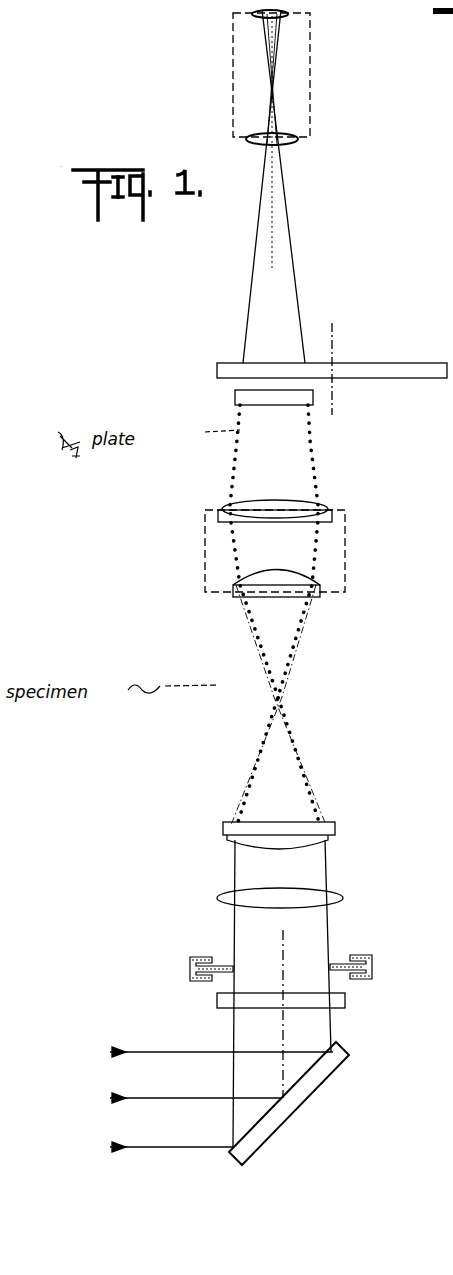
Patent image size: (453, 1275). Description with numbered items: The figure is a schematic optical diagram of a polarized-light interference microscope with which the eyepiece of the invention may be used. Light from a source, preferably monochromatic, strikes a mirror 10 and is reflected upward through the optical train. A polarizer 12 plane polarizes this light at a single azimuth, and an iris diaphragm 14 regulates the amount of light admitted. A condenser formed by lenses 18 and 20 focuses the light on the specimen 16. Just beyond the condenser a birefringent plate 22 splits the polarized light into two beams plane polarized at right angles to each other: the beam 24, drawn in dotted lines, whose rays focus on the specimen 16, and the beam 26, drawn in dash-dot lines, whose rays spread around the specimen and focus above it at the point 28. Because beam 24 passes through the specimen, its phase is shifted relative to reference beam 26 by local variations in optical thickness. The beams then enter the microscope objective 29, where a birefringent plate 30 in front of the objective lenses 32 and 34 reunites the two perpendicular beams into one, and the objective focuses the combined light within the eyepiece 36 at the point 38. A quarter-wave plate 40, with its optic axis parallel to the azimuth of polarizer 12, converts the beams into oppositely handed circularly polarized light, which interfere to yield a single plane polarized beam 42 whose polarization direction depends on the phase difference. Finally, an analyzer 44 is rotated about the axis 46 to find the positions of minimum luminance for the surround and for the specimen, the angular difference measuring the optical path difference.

The mirror 10 is at (320, 1080).
The polarizer 12 is at (301, 998).
The iris diaphragm 14 is at (225, 965).
The specimen 16 is at (277, 697).
The condenser lens 18 is at (275, 906).
The condenser lens 20 is at (286, 845).
The birefringent plate 22 is at (270, 822).
The beam 24 is at (294, 745).
The reference beam 26 is at (256, 752).
The focus point above specimen 28 is at (280, 692).
The microscope objective 29 is at (201, 559).
The birefringent plate 30 is at (283, 598).
The objective lens 32 is at (278, 576).
The objective lens 34 is at (265, 500).
The eyepiece 36 is at (230, 73).
The focus point 38 is at (274, 93).
The quarter-wave plate 40 is at (280, 406).
The plane polarized light beam 42 is at (241, 384).
The analyzer 44 is at (444, 339).
The axis 46 is at (333, 343).